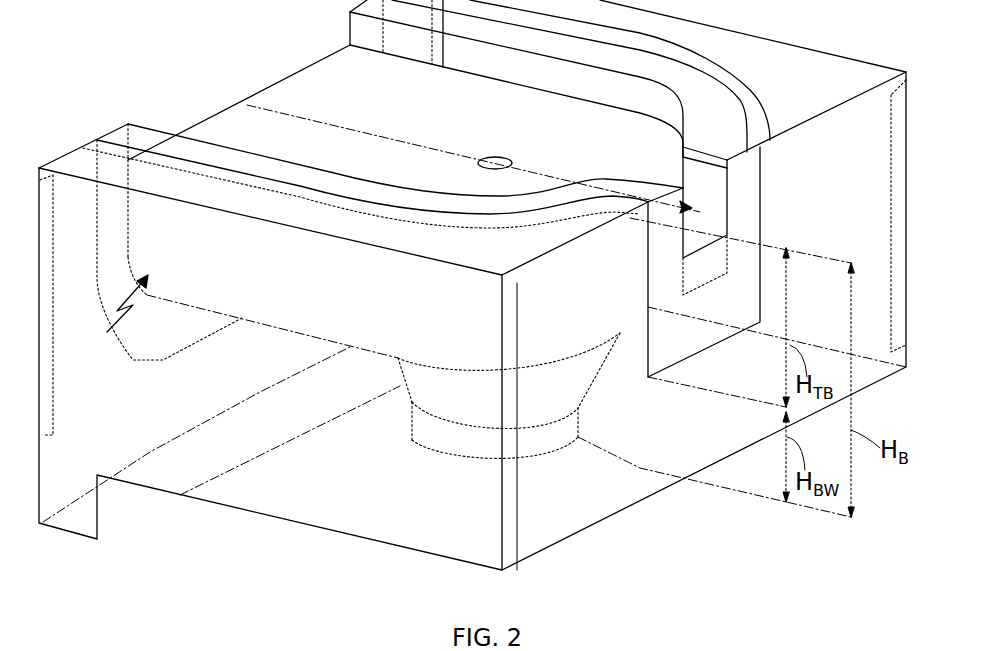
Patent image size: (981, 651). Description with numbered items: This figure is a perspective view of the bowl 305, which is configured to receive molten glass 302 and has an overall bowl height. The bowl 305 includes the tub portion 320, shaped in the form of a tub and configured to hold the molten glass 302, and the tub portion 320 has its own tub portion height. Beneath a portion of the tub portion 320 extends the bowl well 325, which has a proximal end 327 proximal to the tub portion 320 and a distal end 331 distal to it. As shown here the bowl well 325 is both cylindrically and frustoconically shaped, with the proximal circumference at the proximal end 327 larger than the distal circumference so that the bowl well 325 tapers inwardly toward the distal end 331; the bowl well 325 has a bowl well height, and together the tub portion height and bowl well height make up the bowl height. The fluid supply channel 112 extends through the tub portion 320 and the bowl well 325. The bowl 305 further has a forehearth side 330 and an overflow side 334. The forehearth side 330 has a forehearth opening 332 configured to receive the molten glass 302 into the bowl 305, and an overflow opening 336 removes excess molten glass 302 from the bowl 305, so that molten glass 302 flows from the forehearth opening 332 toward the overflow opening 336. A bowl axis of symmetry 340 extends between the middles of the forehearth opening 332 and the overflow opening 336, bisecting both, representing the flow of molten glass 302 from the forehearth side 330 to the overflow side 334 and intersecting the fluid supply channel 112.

The molten glass 302 is at (303, 78).
The forehearth side 330 is at (112, 130).
The forehearth opening 332 is at (210, 115).
The overflow side 334 is at (743, 115).
The overflow opening 336 is at (710, 207).
The bowl axis of symmetry 340 is at (393, 138).
The fluid supply channel 112 is at (497, 157).
The tub portion 320 is at (277, 312).
The bowl 305 is at (102, 314).
The proximal end 327 is at (398, 362).
The bowl well 325 is at (413, 400).
The distal end 331 is at (460, 463).